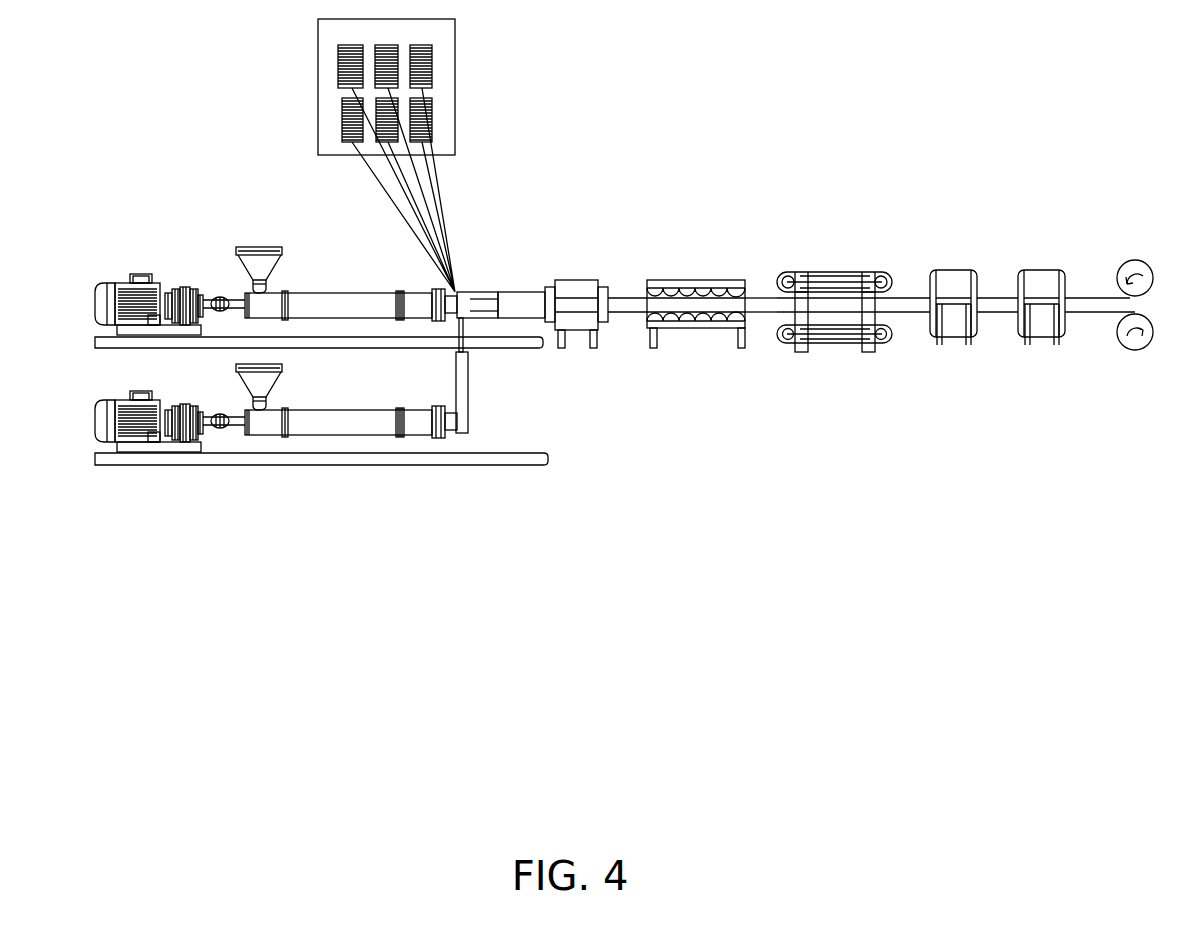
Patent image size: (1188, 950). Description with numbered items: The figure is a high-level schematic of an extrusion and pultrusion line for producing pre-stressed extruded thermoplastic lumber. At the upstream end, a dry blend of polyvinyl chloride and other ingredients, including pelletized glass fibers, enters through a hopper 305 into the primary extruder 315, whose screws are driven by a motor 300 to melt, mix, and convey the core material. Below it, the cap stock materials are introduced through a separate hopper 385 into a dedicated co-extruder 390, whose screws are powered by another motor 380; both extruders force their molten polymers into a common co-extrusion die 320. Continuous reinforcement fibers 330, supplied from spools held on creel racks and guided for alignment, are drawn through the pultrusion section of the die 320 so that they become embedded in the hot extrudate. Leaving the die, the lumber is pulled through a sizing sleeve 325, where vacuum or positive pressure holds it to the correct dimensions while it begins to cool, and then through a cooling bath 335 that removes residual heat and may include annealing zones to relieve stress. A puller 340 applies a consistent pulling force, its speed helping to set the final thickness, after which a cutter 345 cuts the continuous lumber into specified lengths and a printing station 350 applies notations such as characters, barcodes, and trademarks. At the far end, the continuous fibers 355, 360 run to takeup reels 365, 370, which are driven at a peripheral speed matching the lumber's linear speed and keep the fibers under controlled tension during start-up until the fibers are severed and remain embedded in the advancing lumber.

The motor 300 is at (170, 289).
The hopper 305 is at (259, 255).
The primary extruder 315 is at (351, 305).
The co-extrusion die 320 is at (501, 294).
The sizing sleeve 325 is at (596, 302).
The continuous reinforcement fibers 330 is at (386, 155).
The cooling bath 335 is at (712, 295).
The puller 340 is at (853, 298).
The cutter 345 is at (974, 290).
The printing station 350 is at (1041, 290).
The continuous reinforcement fiber 355 is at (1083, 296).
The continuous reinforcement fiber 360 is at (1085, 314).
The takeup reel 365 is at (1135, 261).
The takeup reel 370 is at (1138, 350).
The motor 380 is at (170, 406).
The hopper 385 is at (240, 385).
The second extruder barrel 390 is at (351, 422).